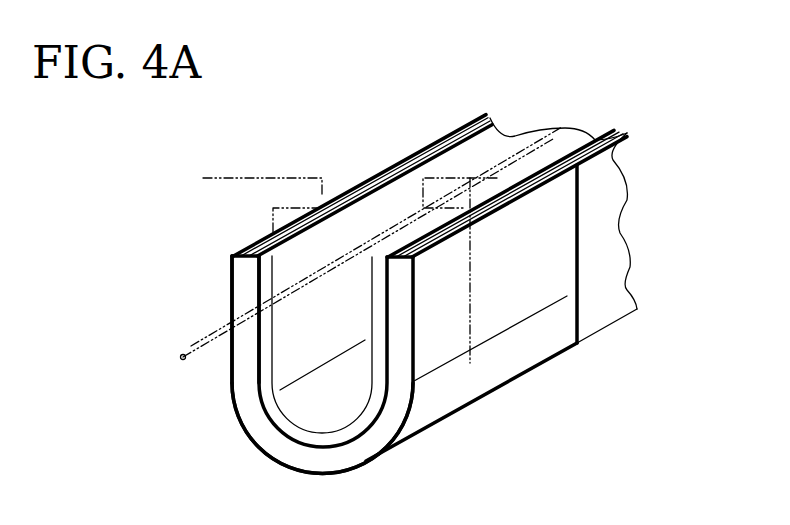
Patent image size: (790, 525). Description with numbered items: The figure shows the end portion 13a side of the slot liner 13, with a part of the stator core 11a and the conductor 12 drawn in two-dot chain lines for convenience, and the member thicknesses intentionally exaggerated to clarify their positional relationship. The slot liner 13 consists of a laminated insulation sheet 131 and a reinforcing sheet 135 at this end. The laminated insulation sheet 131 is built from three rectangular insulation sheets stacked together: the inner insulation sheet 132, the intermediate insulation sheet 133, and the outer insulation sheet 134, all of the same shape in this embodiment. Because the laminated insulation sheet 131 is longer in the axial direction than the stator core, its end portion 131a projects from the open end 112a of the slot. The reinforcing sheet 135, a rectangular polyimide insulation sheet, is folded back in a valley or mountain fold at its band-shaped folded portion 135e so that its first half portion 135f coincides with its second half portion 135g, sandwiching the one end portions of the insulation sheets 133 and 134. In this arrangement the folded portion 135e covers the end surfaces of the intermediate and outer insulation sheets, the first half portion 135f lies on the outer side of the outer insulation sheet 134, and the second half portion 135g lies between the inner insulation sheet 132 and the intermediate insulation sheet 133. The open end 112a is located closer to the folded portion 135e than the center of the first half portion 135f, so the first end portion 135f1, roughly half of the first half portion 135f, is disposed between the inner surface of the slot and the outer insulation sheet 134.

The slot liner 13 is at (686, 76).
The conductor 12 is at (200, 343).
The side surface of housing 11a is at (578, 273).
The open end of the slot 112a is at (473, 263).
The end portion of the slot liner 13a is at (471, 423).
The end portion of the laminated insulation sheet 131a is at (440, 434).
The laminated insulation sheet 131 is at (391, 136).
The insulation sheet 132 is at (403, 63).
The insulation sheet 133 is at (447, 140).
The insulation sheet 134 is at (423, 147).
The reinforcing sheet 135 is at (256, 462).
The folded portion 135e is at (242, 385).
The first half portion 135f is at (527, 427).
The first end portion 135f1 is at (613, 385).
The second half portion 135g is at (330, 252).